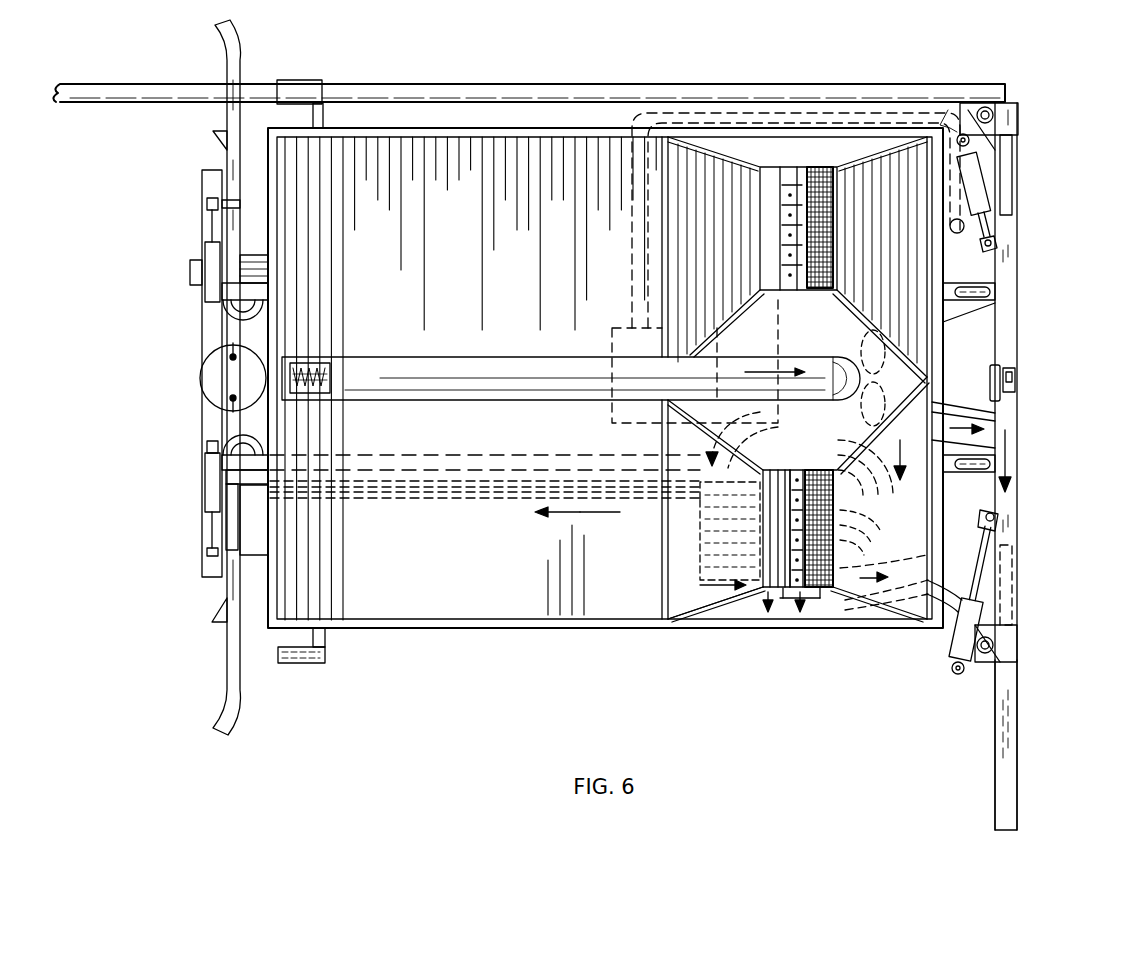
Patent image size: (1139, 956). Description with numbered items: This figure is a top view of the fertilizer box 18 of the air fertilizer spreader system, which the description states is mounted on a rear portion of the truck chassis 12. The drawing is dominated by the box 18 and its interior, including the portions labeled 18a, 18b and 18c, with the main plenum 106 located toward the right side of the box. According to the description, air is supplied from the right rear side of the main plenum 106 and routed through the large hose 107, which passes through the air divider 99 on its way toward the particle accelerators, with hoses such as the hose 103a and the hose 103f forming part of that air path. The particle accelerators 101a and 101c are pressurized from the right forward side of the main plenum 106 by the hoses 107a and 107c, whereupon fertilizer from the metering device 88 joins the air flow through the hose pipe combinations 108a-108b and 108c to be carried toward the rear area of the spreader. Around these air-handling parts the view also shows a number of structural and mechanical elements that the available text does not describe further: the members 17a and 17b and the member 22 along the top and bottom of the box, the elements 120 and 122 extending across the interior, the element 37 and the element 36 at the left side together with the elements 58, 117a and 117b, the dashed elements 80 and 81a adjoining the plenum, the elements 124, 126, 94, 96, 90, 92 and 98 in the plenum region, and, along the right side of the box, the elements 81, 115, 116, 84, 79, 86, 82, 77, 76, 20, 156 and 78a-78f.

The attachment plate 17b is at (303, 80).
The frame rail 22 is at (516, 84).
The grate 18b is at (765, 152).
The screen 124 is at (825, 160).
The hydraulic cylinder 115 is at (978, 176).
The pivot 81 is at (965, 226).
The truck chassis 12 is at (980, 284).
The upright post 84 is at (1010, 271).
The cross bar 79 is at (992, 291).
The guide 86 is at (946, 337).
The latch 156 is at (1018, 379).
The chute 82 is at (950, 408).
The cross bar 77 is at (992, 464).
The post 76 is at (1017, 516).
The brackets 78a-78f is at (1012, 641).
The hydraulic cylinder 116 is at (962, 637).
The post 20 is at (1018, 756).
The frame post 36 is at (200, 645).
The actuator housing 58 is at (197, 485).
The cylinder 117a is at (216, 490).
The cylinder rod 117b is at (212, 512).
The attachment plate 17a is at (312, 665).
The fertilizer box 18 is at (605, 417).
The hub 37 is at (220, 389).
The spring 120 is at (310, 363).
The tube 122 is at (460, 357).
The chamber 18c is at (440, 294).
The conduit 80 is at (612, 328).
The conduit 81a is at (634, 205).
The main plenum 106 is at (745, 318).
The deflector 126 is at (922, 340).
The large hose 107 is at (710, 450).
The particle accelerator 101c is at (775, 478).
The particle accelerator 101a is at (778, 495).
The hose 107a is at (888, 412).
The hose 107c is at (856, 480).
The hose 103a is at (917, 553).
The air divider 99 is at (705, 531).
The hose pipe combinations 108a-108b is at (452, 494).
The hose pipe combination 108c is at (493, 494).
The wall 94 is at (762, 590).
The wall 96 is at (770, 594).
The bottom wall 18a is at (770, 602).
The metering device 88 is at (800, 594).
The grate 90 is at (783, 592).
The frame 92 is at (820, 592).
The screen 98 is at (826, 590).
The hose 103f is at (882, 582).